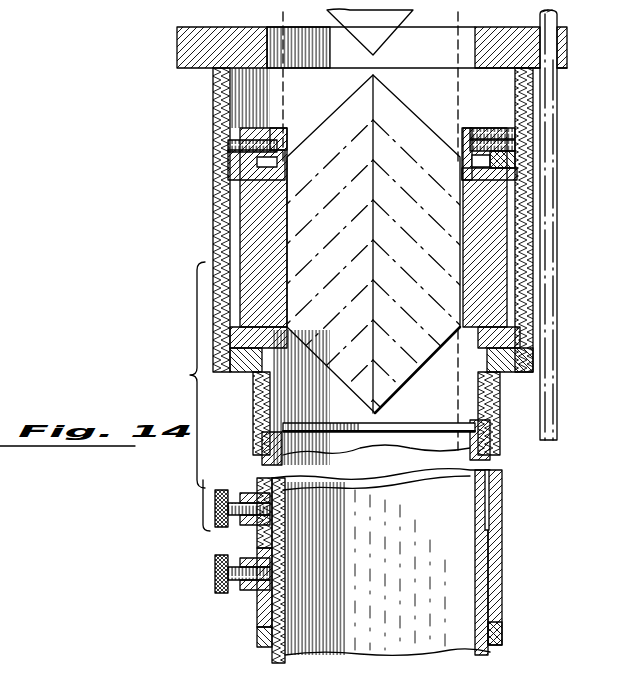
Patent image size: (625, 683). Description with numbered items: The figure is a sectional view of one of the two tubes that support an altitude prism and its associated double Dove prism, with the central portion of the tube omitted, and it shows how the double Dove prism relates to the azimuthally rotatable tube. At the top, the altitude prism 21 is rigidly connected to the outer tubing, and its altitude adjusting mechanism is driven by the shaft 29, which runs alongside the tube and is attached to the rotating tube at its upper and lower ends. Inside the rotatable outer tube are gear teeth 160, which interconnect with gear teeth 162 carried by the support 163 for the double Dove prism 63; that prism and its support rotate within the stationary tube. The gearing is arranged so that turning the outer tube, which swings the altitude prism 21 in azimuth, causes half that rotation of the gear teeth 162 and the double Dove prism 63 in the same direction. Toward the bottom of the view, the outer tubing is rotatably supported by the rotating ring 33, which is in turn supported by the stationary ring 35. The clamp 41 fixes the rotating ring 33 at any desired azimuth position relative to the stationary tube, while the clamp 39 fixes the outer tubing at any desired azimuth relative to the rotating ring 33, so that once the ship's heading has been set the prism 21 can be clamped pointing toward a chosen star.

The altitude prism 21 is at (390, 23).
The shaft 29 is at (557, 278).
The rotating ring 33 is at (257, 605).
The stationary ring 35 is at (257, 634).
The clamp 39 is at (215, 503).
The clamp 41 is at (215, 572).
The double Dove prism 63 is at (400, 372).
The gear teeth 160 is at (505, 130).
The gear teeth 162 is at (468, 128).
The support 163 is at (275, 273).